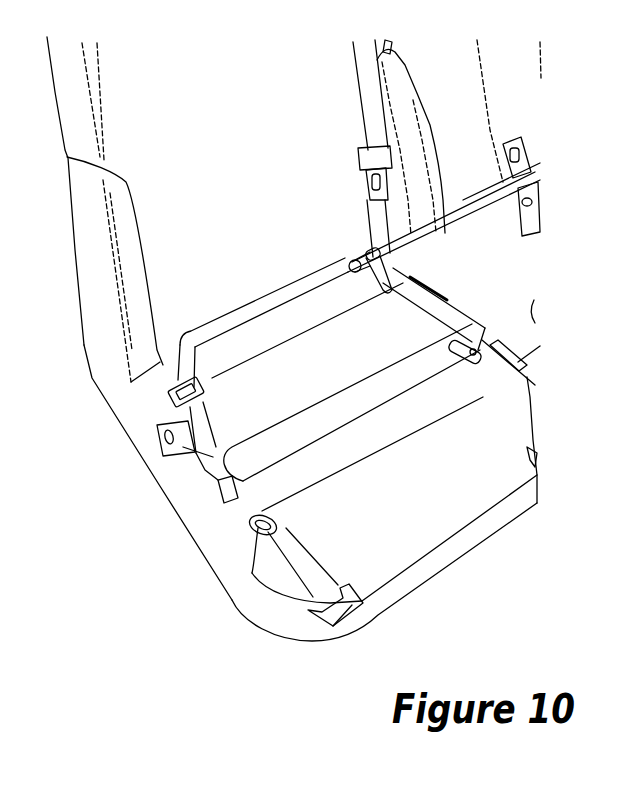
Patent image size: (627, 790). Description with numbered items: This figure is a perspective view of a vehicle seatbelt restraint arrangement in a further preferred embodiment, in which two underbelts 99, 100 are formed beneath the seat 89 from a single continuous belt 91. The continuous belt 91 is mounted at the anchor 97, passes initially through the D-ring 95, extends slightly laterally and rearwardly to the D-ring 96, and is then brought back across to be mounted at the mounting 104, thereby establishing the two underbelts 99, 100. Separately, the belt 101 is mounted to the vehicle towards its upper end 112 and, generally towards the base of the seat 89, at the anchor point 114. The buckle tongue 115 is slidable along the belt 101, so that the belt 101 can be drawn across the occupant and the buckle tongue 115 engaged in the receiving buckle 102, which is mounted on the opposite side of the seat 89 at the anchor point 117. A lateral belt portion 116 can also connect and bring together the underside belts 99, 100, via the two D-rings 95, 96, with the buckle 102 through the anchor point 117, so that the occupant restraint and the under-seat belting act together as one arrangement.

The seat 89 is at (248, 189).
The upper end 112 is at (360, 44).
The belt 101 is at (372, 215).
The buckle tongue 115 is at (360, 166).
The anchor point 114 is at (387, 250).
The mounting 104 is at (490, 320).
The underbelt 99 is at (402, 370).
The underbelt 100 is at (400, 440).
The anchor 97 is at (510, 377).
The continuous belt 91 is at (352, 476).
The receiving buckle 102 is at (212, 450).
The anchor point 117 is at (150, 447).
The lateral belt portion 116 is at (210, 458).
The D-ring 96 is at (238, 490).
The D-ring 95 is at (248, 537).